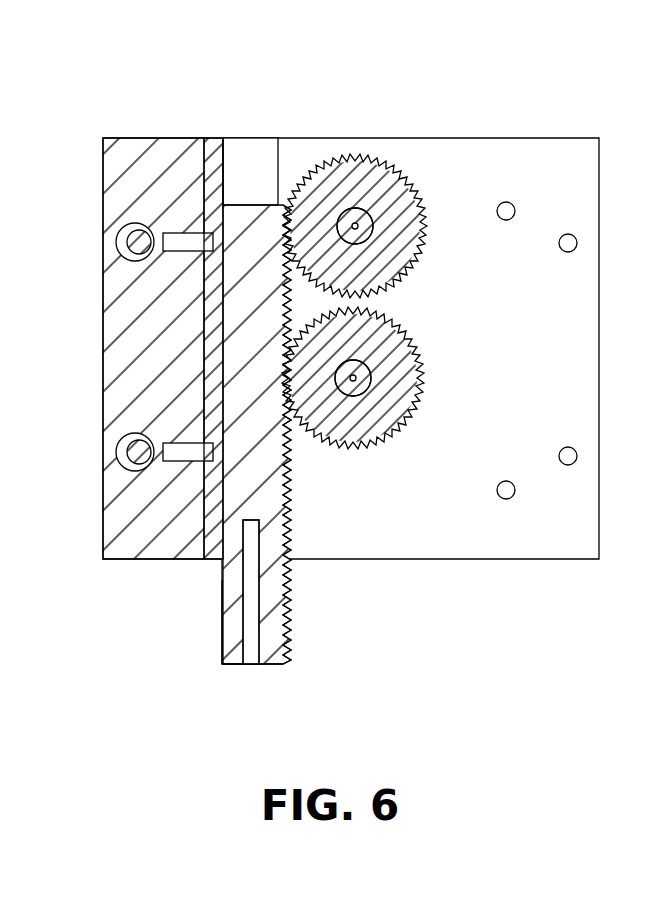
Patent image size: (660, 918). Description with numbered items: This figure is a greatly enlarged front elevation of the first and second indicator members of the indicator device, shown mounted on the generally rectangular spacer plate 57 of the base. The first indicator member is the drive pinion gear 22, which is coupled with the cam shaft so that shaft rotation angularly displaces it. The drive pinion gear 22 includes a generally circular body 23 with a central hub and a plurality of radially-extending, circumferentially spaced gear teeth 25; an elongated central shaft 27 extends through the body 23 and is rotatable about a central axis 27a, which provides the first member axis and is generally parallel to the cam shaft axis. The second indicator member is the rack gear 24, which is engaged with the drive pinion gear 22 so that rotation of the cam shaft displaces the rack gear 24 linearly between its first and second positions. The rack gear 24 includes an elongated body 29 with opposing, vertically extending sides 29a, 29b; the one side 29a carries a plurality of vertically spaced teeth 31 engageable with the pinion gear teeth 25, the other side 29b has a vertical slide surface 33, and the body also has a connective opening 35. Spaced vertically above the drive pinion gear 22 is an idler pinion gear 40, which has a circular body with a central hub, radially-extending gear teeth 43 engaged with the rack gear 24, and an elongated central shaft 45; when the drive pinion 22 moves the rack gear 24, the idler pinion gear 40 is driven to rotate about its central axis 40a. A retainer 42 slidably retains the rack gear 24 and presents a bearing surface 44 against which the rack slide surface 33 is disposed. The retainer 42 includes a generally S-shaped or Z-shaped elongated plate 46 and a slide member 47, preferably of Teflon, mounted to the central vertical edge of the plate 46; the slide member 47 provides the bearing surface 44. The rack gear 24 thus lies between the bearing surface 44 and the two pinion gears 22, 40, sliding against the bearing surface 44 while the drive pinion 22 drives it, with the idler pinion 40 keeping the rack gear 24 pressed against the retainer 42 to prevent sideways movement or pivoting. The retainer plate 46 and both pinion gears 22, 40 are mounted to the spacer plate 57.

The drive pinion gear 22 is at (383, 414).
The circular body 23 is at (390, 352).
The rack gear 24 is at (387, 626).
The gear teeth 25 is at (388, 320).
The central shaft 27 is at (371, 395).
The central axis 27a is at (358, 379).
The elongated body 29 is at (305, 461).
The one side 29a is at (287, 585).
The other side 29b is at (222, 600).
The teeth 31 is at (287, 316).
The vertical slide surface 33 is at (222, 578).
The connective opening 35 is at (252, 645).
The idler pinion gear 40 is at (386, 180).
The central axis 40a is at (358, 227).
The retainer 42 is at (145, 297).
The gear teeth 43 is at (355, 150).
The bearing surface 44 is at (232, 182).
The central shaft 45 is at (367, 243).
The elongated plate 46 is at (250, 145).
The slide member 47 is at (211, 332).
The spacer plate 57 is at (572, 136).